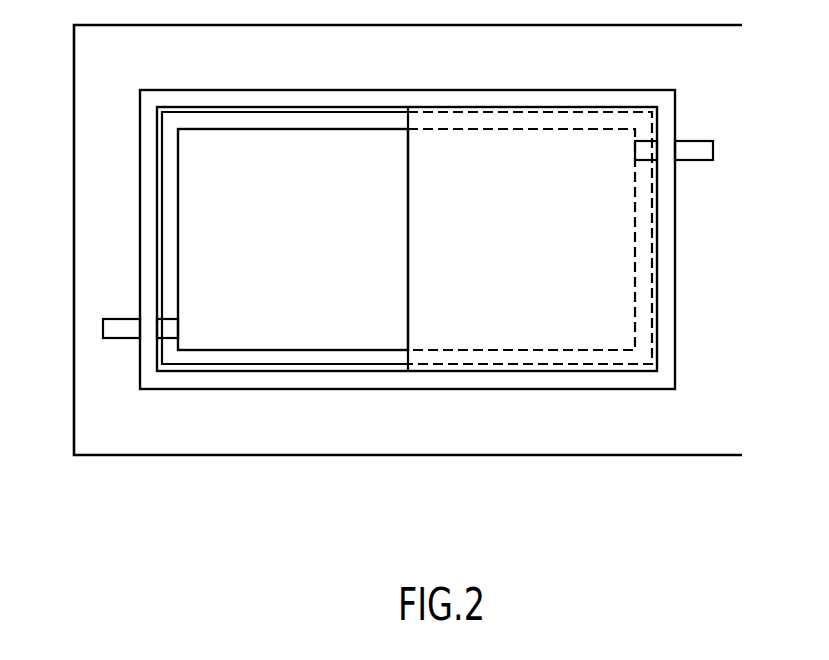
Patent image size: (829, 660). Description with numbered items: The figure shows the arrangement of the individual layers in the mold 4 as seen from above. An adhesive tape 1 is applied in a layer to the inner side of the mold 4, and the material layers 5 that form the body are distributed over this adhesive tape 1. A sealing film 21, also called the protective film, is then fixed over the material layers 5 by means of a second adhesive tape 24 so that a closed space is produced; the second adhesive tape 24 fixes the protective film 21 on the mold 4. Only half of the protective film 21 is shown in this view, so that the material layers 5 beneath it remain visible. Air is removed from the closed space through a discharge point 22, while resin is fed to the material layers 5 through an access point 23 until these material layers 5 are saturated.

The adhesive tape 1 is at (277, 358).
The mold 4 is at (485, 425).
The material layers 5 is at (290, 207).
The sealing film 21 is at (528, 207).
The discharge point 22 is at (697, 149).
The access point 23 is at (117, 323).
The second adhesive tape 24 is at (195, 378).